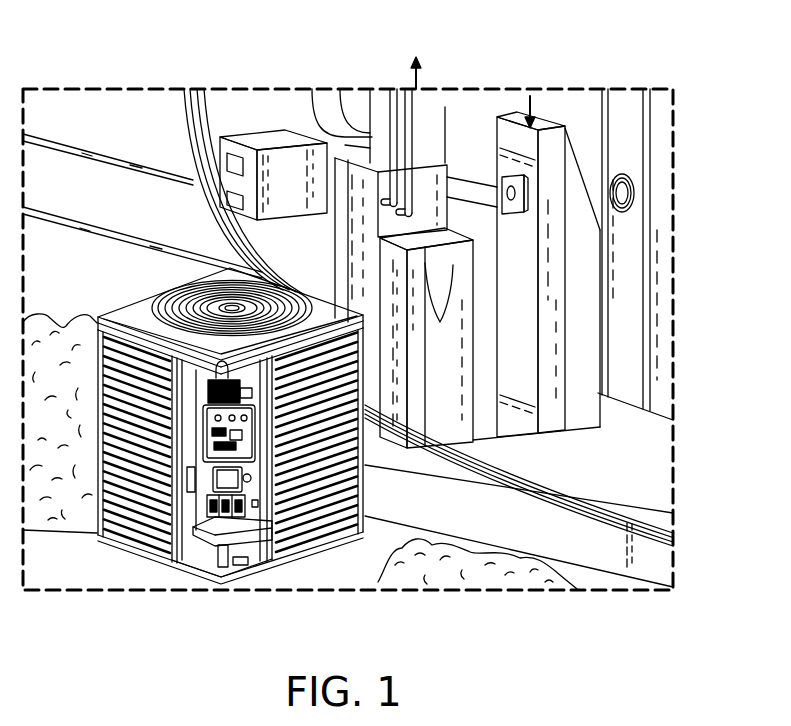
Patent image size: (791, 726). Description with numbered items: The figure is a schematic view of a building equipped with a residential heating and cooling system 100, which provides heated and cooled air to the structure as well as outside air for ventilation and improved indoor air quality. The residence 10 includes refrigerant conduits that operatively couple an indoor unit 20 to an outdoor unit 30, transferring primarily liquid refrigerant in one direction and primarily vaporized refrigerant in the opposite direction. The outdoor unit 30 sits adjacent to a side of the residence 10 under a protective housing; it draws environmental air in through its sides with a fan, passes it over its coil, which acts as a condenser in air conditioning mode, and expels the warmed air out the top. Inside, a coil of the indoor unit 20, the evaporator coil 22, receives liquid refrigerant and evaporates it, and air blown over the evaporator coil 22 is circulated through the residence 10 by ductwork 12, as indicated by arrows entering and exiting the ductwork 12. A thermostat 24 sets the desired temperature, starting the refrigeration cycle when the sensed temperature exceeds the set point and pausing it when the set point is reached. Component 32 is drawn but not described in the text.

The residential heating and cooling system 100 is at (672, 48).
The residence 10 is at (103, 112).
The ductwork 12 is at (588, 297).
The indoor unit 20 is at (460, 408).
The evaporator coil 22 is at (435, 178).
The thermostat 24 is at (637, 195).
The outdoor unit 30 is at (126, 533).
The control panel / electrical components 32 is at (210, 393).